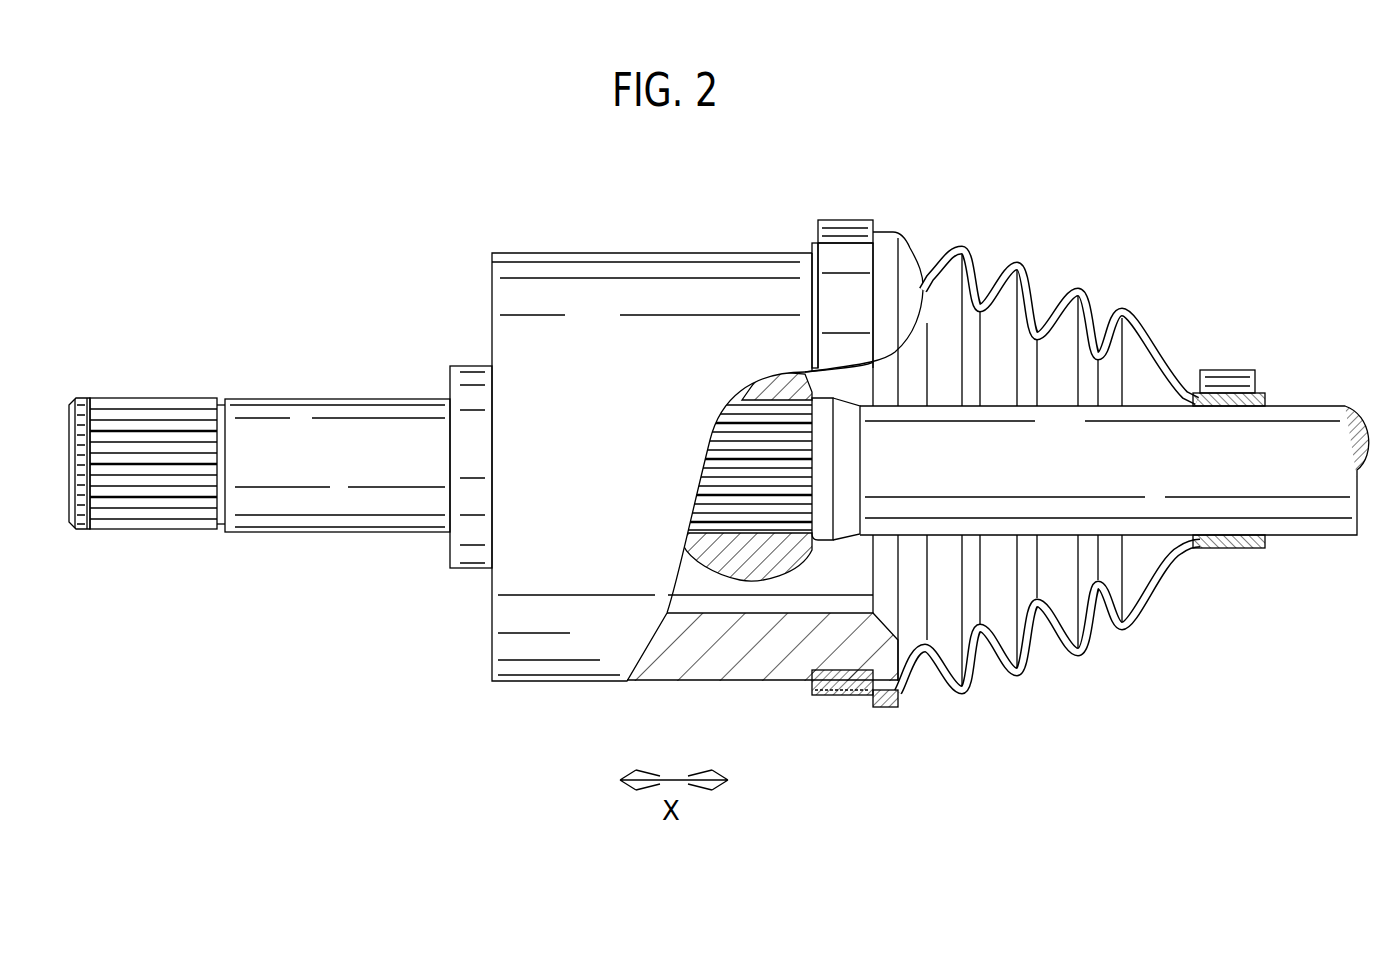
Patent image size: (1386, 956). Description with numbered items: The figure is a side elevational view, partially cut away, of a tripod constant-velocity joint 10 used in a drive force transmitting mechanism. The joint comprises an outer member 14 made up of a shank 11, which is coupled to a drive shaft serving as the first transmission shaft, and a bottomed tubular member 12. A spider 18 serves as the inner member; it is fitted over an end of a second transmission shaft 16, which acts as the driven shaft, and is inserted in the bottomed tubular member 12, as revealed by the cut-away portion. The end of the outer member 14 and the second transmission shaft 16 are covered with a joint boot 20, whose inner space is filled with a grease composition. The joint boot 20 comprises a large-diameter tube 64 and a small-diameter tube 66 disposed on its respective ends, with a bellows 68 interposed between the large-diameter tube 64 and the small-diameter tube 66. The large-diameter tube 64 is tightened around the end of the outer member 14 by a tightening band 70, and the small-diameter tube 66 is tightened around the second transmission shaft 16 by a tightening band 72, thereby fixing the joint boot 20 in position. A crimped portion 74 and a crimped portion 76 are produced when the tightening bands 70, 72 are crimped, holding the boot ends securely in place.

The tripod constant-velocity joint 10 is at (298, 394).
The shank 11 is at (362, 468).
The bottomed tubular member 12 is at (570, 628).
The outer member 14 is at (596, 249).
The second transmission shaft 16 is at (1327, 425).
The spider 18 is at (727, 592).
The joint boot 20 is at (1002, 468).
The large-diameter tube 64 is at (850, 680).
The small-diameter tube 66 is at (1225, 545).
The bellows 68 is at (1080, 650).
The tightening band 70 is at (830, 256).
The tightening band 72 is at (1237, 380).
The crimped portion 74 is at (838, 222).
The crimped portion 76 is at (1266, 352).